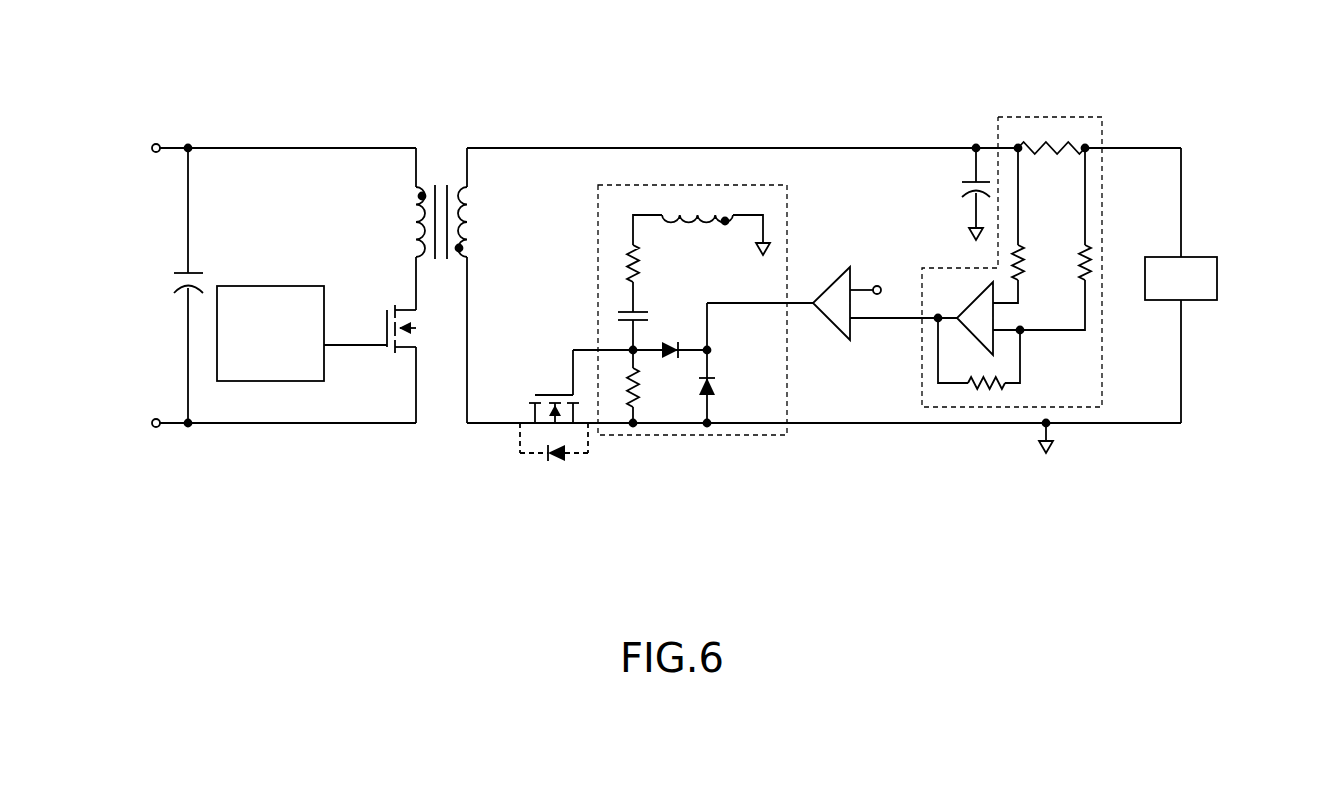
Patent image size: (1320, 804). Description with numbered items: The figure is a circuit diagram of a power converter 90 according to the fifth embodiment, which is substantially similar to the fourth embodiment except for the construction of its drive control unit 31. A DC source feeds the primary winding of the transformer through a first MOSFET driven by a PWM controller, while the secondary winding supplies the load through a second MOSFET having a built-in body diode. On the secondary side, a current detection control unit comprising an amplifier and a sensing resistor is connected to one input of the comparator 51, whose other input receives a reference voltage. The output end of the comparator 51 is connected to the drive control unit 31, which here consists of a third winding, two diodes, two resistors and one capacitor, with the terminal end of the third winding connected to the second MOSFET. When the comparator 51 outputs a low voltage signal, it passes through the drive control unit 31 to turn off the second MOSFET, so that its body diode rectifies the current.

The drive control unit 31 is at (747, 183).
The comparator 51 is at (832, 325).
The power converter 90 is at (258, 486).